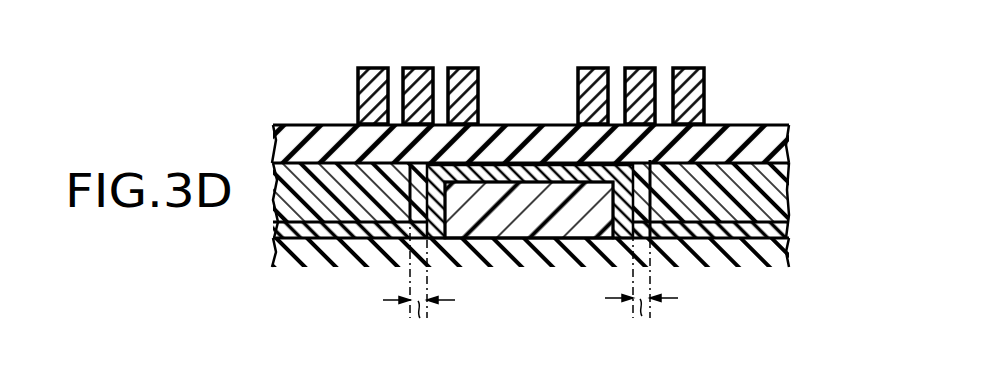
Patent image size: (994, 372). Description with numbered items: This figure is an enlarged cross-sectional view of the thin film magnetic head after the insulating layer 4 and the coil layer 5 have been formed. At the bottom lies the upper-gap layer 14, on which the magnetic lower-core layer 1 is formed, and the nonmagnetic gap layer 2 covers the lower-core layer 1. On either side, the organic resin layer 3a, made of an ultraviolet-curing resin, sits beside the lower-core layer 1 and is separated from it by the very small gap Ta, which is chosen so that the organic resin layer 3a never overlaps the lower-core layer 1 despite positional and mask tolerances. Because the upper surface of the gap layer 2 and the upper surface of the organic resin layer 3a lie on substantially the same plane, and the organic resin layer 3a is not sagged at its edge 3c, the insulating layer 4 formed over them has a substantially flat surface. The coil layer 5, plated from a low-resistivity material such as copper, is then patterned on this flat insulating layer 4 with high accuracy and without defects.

The lower-core layer 1 is at (533, 215).
The gap layer 2 is at (783, 226).
The organic resin layer 3a is at (318, 205).
The edge of the organic resin layer 3c is at (403, 170).
The insulating layer 4 is at (288, 130).
The coil layer 5 is at (470, 92).
The upper-gap layer 14 is at (793, 258).
The gap Ta is at (530, 279).